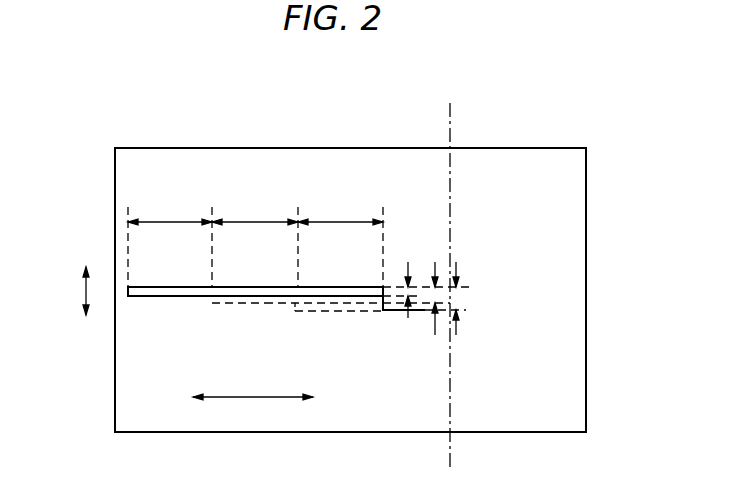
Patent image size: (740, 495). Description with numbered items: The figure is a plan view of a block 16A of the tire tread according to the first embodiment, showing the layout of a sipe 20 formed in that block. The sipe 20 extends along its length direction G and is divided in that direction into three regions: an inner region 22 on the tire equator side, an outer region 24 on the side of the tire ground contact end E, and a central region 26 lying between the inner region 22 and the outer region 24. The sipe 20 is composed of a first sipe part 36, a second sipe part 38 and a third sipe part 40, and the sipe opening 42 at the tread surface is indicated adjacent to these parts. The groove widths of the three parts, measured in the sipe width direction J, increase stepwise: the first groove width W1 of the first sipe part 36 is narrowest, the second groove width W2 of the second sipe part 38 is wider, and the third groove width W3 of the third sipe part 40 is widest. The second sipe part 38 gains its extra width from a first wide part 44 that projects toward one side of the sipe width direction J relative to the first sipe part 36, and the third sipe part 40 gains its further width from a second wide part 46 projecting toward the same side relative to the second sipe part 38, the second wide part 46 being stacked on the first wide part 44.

The recording medium / drive region 16A is at (348, 100).
The sipe 20 is at (148, 297).
The inner region 22 is at (170, 241).
The outer region 24 is at (340, 241).
The central region 26 is at (255, 241).
The first sipe part 36 is at (182, 297).
The second sipe part 38 is at (253, 304).
The third sipe part 40 is at (325, 312).
The sipe opening 42 is at (340, 288).
The first wide part 44 is at (275, 304).
The second wide part 46 is at (372, 312).
The first groove width W1 is at (408, 270).
The second groove width W2 is at (435, 270).
The third groove width W3 is at (457, 270).
The sipe width direction J is at (76, 291).
The length direction G is at (268, 397).
The tire ground contact end E is at (450, 453).